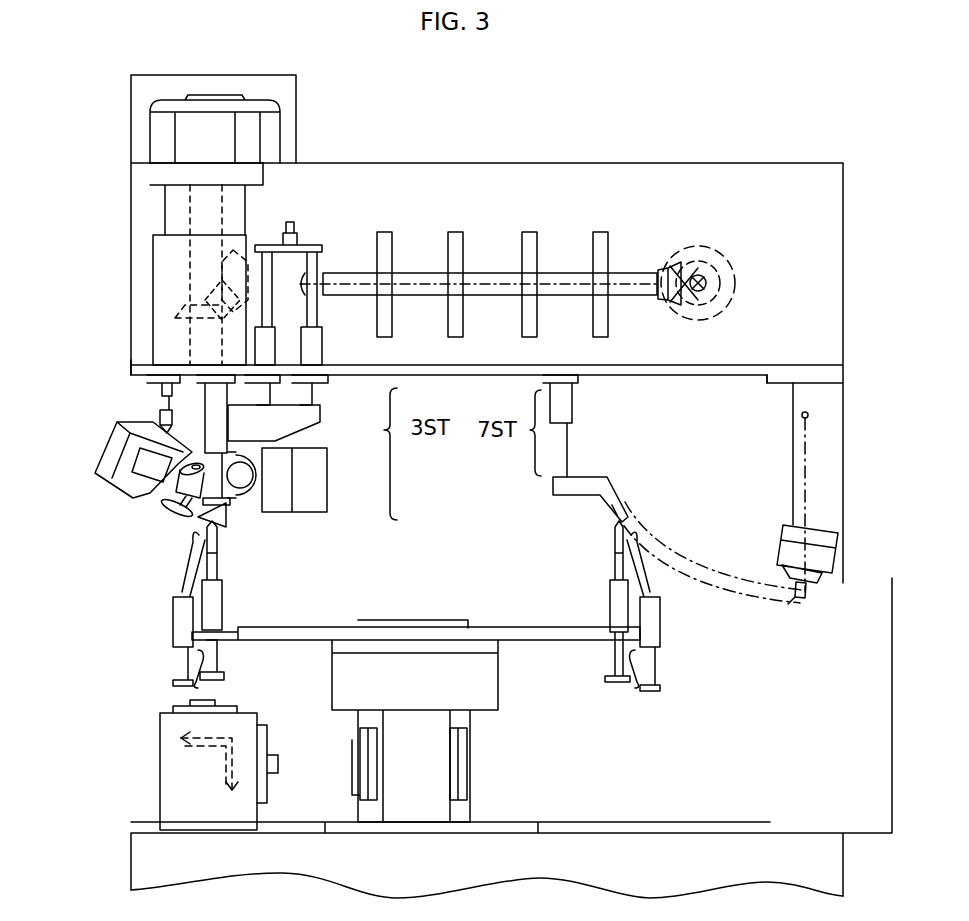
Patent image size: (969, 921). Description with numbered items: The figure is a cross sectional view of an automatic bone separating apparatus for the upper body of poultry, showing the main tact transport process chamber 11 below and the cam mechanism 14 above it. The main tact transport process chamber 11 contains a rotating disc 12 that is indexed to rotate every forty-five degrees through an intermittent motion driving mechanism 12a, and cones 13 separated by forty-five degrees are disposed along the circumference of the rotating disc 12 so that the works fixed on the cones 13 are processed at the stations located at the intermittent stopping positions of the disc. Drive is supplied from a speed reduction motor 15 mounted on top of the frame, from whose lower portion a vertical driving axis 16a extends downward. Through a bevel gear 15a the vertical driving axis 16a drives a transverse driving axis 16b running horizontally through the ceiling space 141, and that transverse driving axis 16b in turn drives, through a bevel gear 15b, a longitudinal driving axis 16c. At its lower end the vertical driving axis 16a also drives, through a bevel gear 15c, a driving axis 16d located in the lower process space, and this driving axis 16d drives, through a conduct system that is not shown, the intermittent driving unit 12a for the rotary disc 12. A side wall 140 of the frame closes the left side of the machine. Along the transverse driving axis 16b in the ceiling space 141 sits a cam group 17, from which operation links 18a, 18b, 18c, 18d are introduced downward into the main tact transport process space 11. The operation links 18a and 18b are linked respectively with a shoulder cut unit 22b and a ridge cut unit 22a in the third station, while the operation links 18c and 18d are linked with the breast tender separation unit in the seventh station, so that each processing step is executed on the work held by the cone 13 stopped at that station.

The main tact transport process chamber 11 is at (424, 529).
The rotating disc 12 is at (487, 622).
The intermittent motion driving mechanism 12a is at (357, 730).
The cones 13 is at (231, 590).
The cam mechanism 14 is at (465, 163).
The frame side wall 140 is at (131, 366).
The ceiling space 141 is at (785, 175).
The motor 15 is at (280, 133).
The bevel gear 15a is at (190, 312).
The bevel gear 15b is at (725, 305).
The bevel gear 15c is at (204, 775).
The vertical driving axis 16a is at (195, 264).
The transverse driving axis 16b is at (630, 275).
The longitudinal driving axis 16c is at (703, 283).
The driving axis 16d is at (272, 755).
The cam group 17 is at (373, 216).
The operation link 18a is at (160, 408).
The operation link 18b is at (290, 258).
The operation link 18c is at (562, 452).
The operation link 18d is at (793, 450).
The ridge cut unit 22a is at (315, 450).
The shoulder cut unit 22b is at (165, 502).